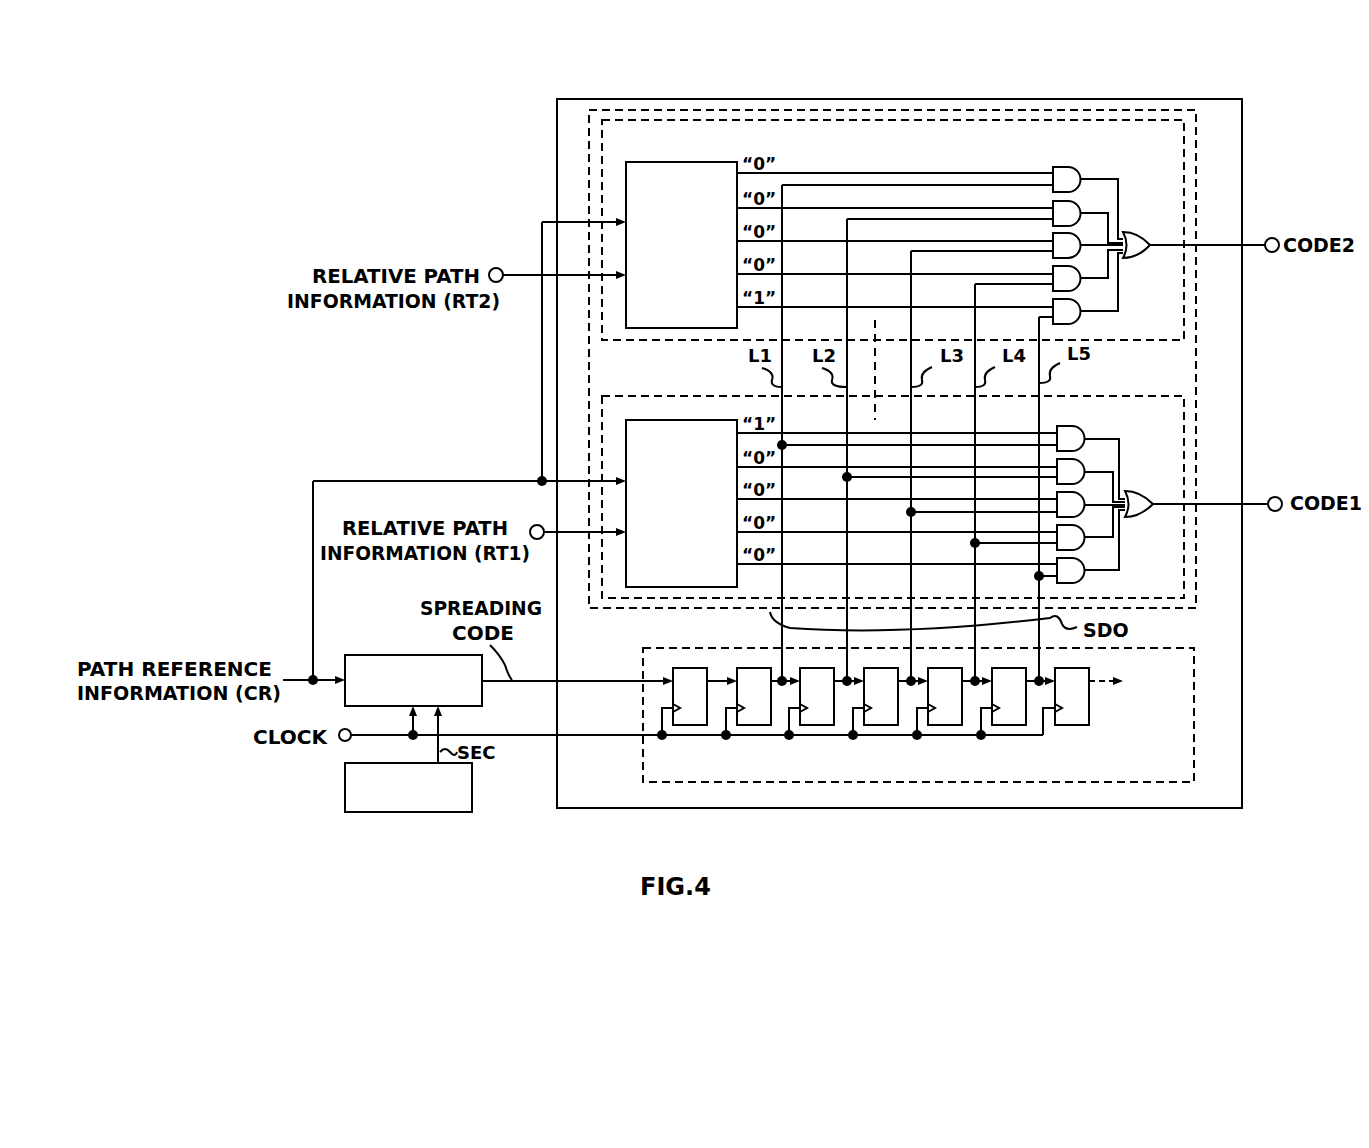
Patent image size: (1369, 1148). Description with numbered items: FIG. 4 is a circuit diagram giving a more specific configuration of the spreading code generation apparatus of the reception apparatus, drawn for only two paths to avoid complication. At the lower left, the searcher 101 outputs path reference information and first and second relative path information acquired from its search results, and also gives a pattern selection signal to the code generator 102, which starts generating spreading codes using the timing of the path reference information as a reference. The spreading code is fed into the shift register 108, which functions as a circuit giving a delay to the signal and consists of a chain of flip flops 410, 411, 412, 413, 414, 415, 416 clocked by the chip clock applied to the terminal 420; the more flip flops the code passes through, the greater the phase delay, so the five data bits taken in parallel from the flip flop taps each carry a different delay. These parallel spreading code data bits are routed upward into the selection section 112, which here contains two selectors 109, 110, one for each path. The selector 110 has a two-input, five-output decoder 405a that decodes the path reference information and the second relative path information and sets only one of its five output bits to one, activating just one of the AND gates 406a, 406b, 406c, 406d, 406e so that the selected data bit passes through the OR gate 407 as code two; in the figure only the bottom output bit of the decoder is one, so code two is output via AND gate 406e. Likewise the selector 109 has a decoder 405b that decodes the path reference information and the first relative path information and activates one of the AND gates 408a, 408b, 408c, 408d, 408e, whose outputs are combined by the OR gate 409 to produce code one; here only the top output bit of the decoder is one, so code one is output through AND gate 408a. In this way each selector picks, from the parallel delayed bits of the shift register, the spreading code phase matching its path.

The searcher 101 is at (472, 787).
The code generator 102 is at (362, 655).
The shift register 108 is at (1196, 666).
The selector 109 is at (1196, 462).
The selector 110 is at (1196, 300).
The selection section 112 is at (1196, 197).
The decoder 405a is at (692, 162).
The decoder 405b is at (640, 421).
The AND gate 406a is at (1060, 167).
The AND gate 406b is at (1072, 201).
The AND gate 406c is at (1098, 258).
The AND gate 406d is at (1098, 291).
The AND gate 406e is at (1082, 320).
The OR gate 407 is at (1136, 234).
The AND gate 408a is at (1064, 426).
The AND gate 408b is at (1080, 459).
The AND gate 408c is at (1100, 517).
The AND gate 408d is at (1100, 550).
The AND gate 408e is at (1085, 582).
The OR gate 409 is at (1136, 492).
The flip flop 410 is at (690, 725).
The flip flop 411 is at (754, 725).
The flip flop 412 is at (817, 725).
The flip flop 413 is at (881, 725).
The flip flop 414 is at (945, 725).
The flip flop 415 is at (1009, 725).
The flip flop 416 is at (1072, 725).
The terminal 420 is at (343, 741).